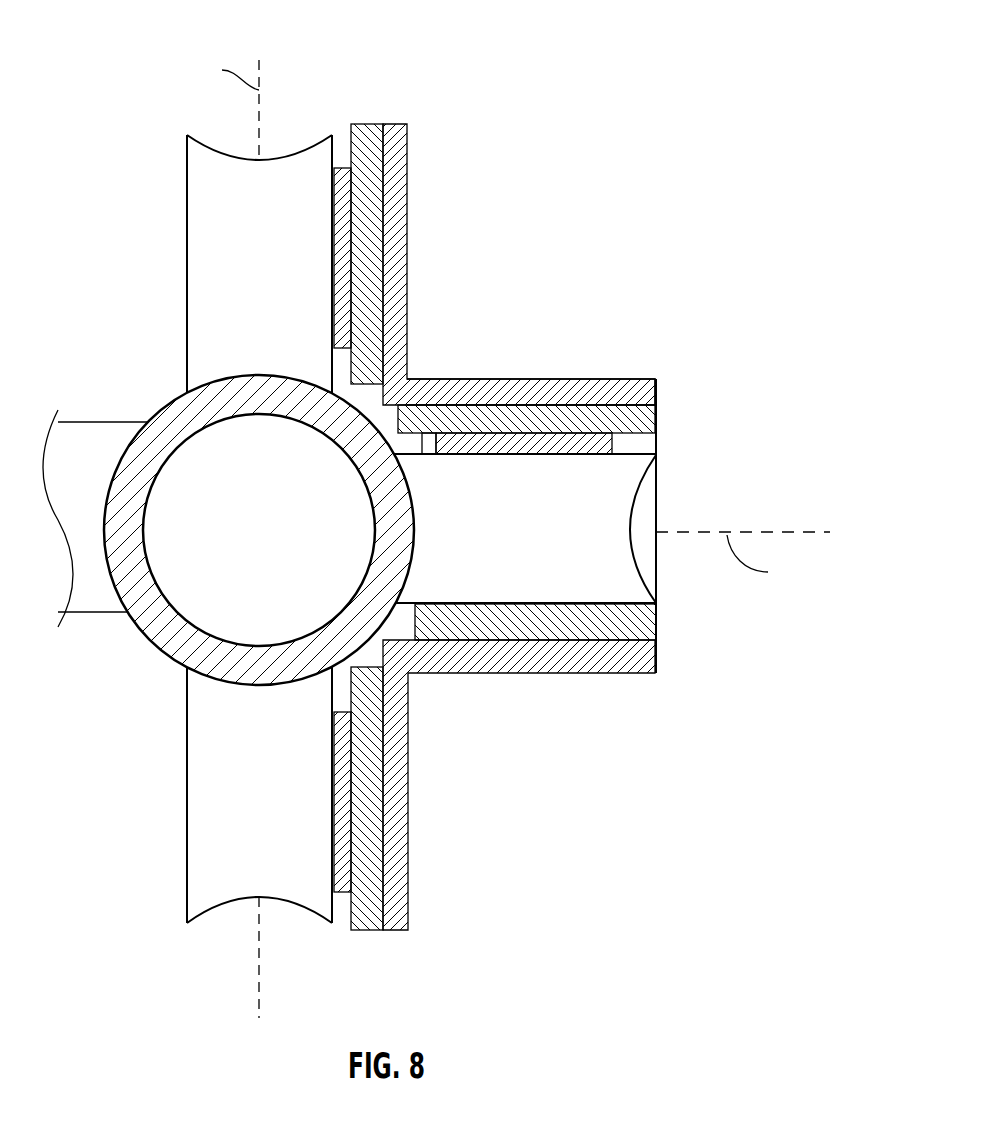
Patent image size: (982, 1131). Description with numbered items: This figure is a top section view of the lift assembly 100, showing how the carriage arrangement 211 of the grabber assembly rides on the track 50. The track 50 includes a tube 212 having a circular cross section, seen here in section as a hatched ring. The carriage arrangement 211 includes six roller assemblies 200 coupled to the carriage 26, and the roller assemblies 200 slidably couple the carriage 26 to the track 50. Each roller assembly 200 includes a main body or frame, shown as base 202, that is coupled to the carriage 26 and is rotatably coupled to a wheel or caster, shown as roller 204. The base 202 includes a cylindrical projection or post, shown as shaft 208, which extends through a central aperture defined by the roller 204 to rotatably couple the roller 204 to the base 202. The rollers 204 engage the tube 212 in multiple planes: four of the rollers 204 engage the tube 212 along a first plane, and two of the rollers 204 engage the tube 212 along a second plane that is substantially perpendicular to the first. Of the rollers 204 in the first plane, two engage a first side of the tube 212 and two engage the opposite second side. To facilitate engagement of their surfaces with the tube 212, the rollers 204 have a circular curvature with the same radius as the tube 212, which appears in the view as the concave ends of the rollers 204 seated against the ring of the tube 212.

The fluid connection system 100 is at (645, 48).
The roller assembly 200 is at (334, 58).
The base 202 is at (364, 140).
The roller 204 is at (210, 198).
The shaft 208 is at (343, 270).
The carriage arrangement 211 is at (618, 145).
The tube 212 is at (150, 628).
The carriage 26 is at (428, 398).
The track 50 is at (141, 417).